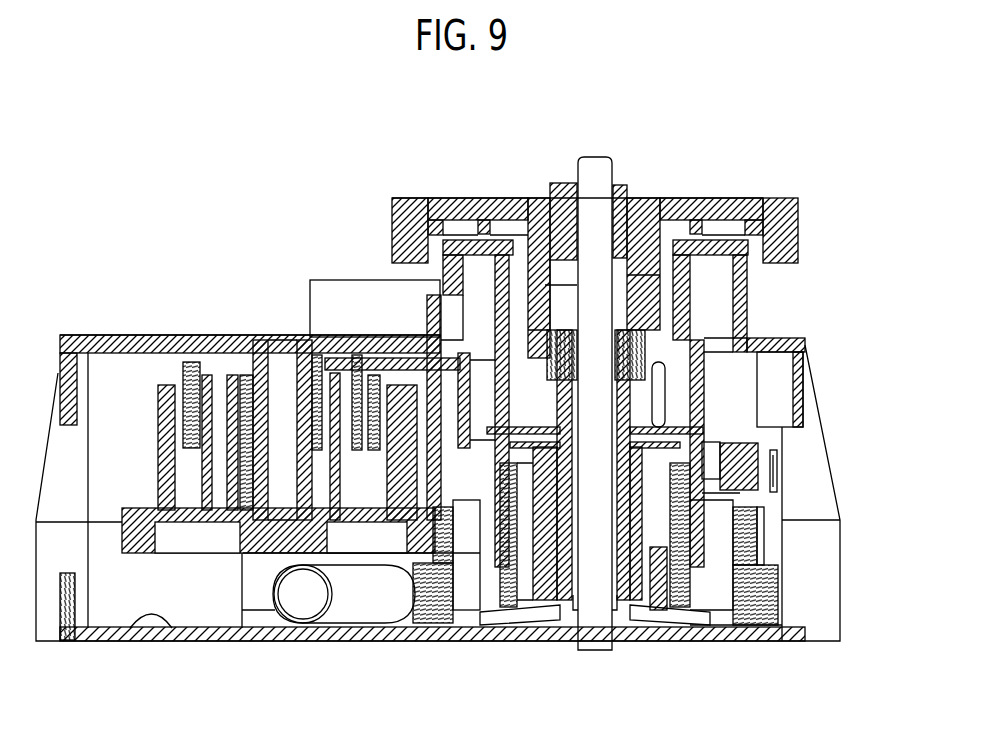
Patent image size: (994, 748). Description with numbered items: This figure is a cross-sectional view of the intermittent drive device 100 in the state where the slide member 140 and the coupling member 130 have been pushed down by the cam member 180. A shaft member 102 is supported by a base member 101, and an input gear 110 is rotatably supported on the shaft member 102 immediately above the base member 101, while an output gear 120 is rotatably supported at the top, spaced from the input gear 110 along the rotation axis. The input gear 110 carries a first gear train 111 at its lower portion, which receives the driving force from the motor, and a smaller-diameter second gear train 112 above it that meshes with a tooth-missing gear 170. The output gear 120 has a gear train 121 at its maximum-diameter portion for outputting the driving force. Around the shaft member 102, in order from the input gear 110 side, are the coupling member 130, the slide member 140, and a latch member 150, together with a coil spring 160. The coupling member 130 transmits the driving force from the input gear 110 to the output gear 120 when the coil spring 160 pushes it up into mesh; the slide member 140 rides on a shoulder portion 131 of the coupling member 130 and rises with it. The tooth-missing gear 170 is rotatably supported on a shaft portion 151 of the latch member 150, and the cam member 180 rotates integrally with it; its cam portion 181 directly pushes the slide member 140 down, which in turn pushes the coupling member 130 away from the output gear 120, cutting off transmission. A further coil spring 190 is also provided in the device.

The intermittent drive device 100 is at (690, 132).
The base member 101 is at (125, 628).
The shaft member 102 is at (578, 160).
The input gear 110 is at (747, 582).
The first gear train 111 is at (777, 592).
The second gear train 112 is at (769, 533).
The output gear 120 is at (667, 198).
The gear train 121 is at (798, 237).
The coupling member 130 is at (660, 437).
The shoulder portion 131 is at (703, 395).
The slide member 140 is at (705, 362).
The latch member 150 is at (740, 287).
The shaft portion 151 is at (273, 427).
The coil spring 160 is at (543, 525).
The tooth-missing gear 170 is at (163, 428).
The cam member 180 is at (222, 365).
The cam portion 181 is at (452, 443).
The coil spring 190 is at (357, 615).